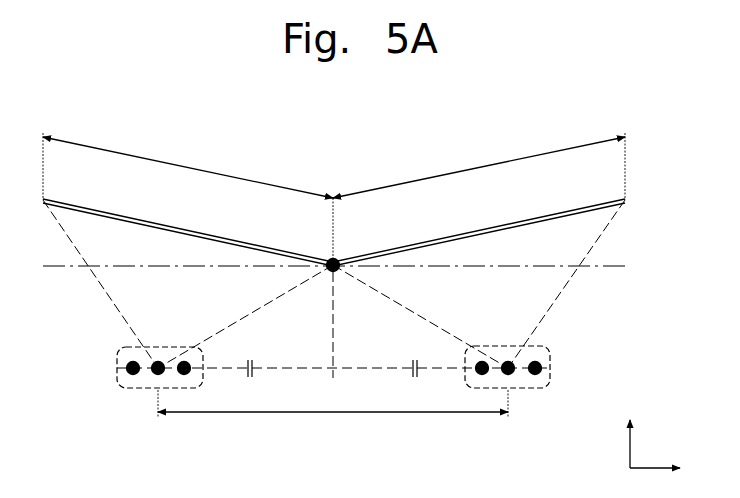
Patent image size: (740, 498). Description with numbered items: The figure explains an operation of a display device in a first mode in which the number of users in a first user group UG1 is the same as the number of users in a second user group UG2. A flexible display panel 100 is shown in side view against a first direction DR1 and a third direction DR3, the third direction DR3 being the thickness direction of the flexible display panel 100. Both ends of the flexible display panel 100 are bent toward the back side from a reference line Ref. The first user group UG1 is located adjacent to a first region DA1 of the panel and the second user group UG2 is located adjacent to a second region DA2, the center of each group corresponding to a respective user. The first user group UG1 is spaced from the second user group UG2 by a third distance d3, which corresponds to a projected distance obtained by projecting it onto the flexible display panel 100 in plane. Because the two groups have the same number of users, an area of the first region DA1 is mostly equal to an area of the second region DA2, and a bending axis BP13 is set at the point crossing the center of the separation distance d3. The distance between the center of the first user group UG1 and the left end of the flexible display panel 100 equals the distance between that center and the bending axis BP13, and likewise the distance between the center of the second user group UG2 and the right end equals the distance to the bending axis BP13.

The flexible display panel 100 is at (628, 200).
The reference line Ref is at (602, 266).
The bending axis BP13 is at (337, 258).
The first region DA1 is at (188, 167).
The second region DA2 is at (479, 167).
The first user group UG1 is at (115, 368).
The second user group UG2 is at (552, 368).
The third distance d3 is at (333, 412).
The first direction DR1 is at (674, 468).
The third direction DR3 is at (631, 432).